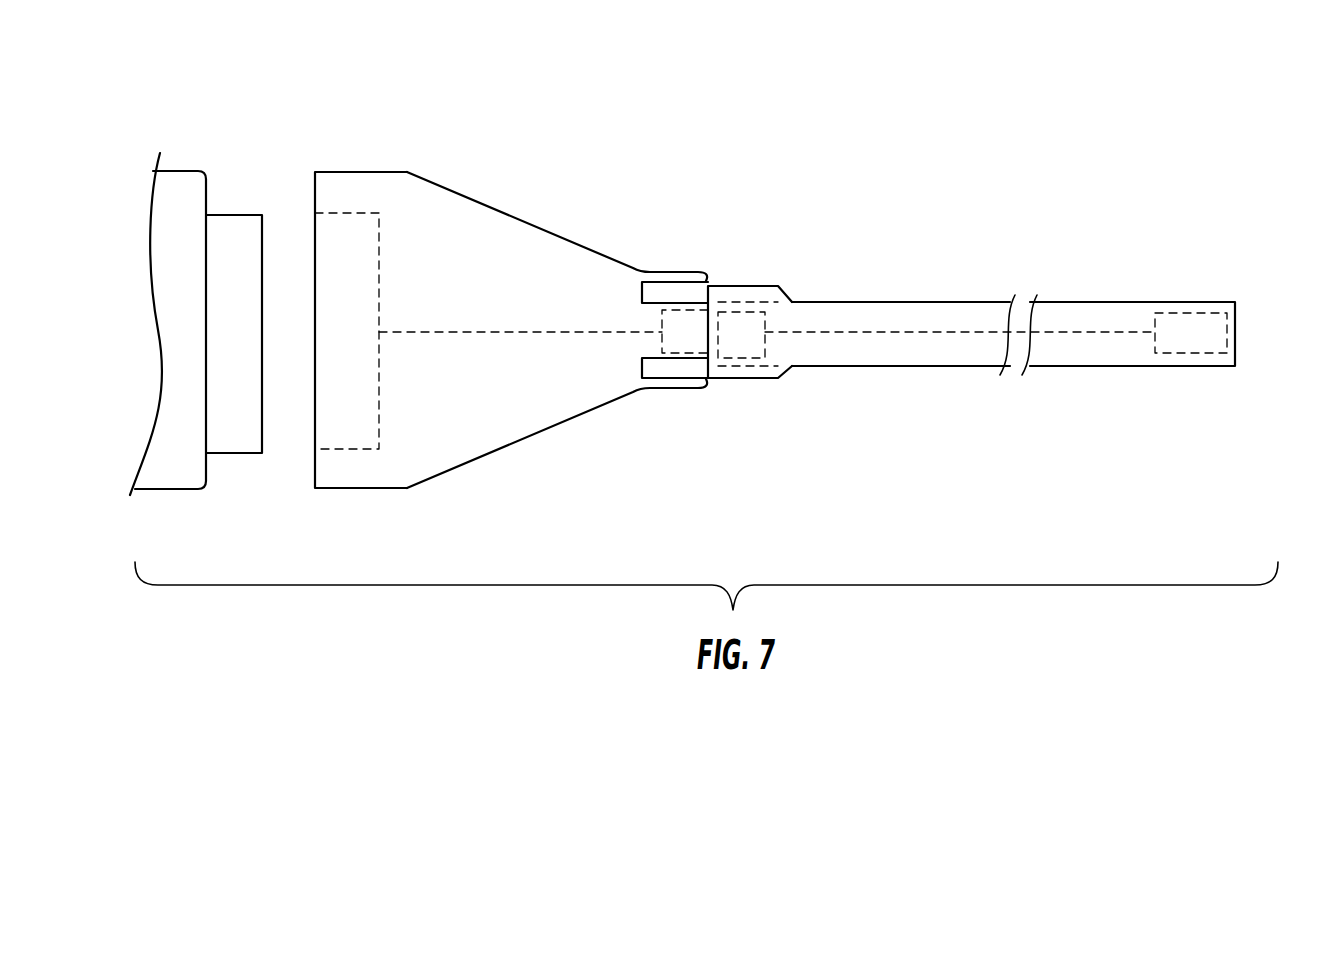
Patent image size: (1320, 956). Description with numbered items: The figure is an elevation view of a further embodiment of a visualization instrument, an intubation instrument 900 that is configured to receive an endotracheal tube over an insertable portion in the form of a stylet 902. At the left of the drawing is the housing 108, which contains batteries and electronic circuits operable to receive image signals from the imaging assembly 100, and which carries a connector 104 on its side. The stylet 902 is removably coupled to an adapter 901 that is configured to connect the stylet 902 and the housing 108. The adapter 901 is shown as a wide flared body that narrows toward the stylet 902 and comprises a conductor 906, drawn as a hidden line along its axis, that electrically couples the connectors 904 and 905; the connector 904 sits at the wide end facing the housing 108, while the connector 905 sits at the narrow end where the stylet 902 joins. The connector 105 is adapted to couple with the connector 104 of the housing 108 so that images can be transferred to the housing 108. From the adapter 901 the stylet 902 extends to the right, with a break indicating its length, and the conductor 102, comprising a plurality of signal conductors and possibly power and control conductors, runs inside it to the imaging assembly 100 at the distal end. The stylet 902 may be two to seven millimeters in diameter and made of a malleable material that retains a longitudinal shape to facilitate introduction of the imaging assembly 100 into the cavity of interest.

The intubation instrument 900 is at (780, 150).
The adapter 901 is at (498, 210).
The stylet 902 is at (863, 300).
The connector 904 is at (352, 208).
The connector 905 is at (682, 340).
The conductor 906 is at (523, 331).
The housing 108 is at (183, 190).
The connector 104 is at (232, 442).
The connector 105 is at (748, 343).
The conductor 102 is at (1065, 330).
The imaging assembly 100 is at (1197, 325).